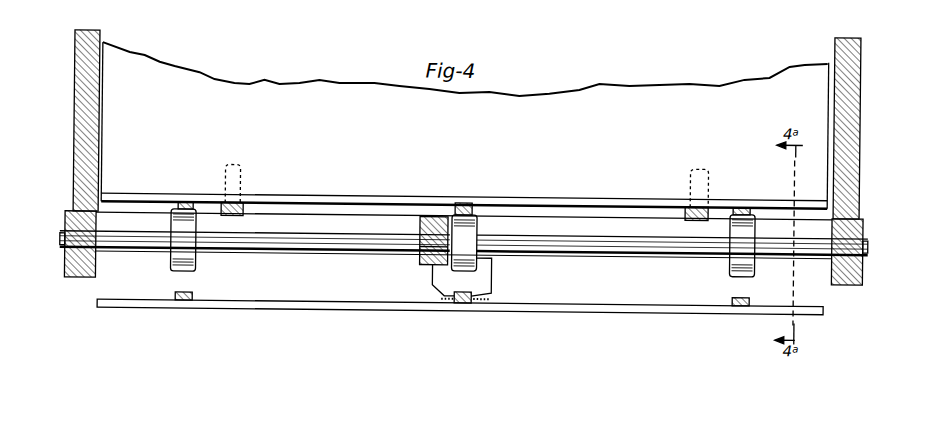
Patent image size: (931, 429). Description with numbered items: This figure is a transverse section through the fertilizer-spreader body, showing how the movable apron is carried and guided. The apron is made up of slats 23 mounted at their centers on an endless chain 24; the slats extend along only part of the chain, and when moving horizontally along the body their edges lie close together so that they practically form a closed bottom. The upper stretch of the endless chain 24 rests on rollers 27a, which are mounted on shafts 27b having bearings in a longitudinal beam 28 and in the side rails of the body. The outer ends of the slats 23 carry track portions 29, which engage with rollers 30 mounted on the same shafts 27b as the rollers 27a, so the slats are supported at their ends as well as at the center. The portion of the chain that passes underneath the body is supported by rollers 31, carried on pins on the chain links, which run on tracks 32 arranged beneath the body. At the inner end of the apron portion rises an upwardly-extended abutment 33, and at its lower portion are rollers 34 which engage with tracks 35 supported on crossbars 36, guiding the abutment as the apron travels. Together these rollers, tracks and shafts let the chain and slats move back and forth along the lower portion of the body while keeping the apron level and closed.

The slats 23 is at (371, 192).
The endless chain 24 is at (468, 199).
The rollers 27a is at (480, 259).
The shafts 27b is at (302, 248).
The longitudinal beam 28 is at (422, 255).
The track portions 29 is at (184, 200).
The rollers 30 is at (200, 262).
The rollers 31 is at (478, 289).
The tracks 32 is at (490, 299).
The abutment 33 is at (373, 86).
The rollers 34 is at (229, 166).
The tracks 35 is at (247, 201).
The crossbars 36 is at (559, 217).